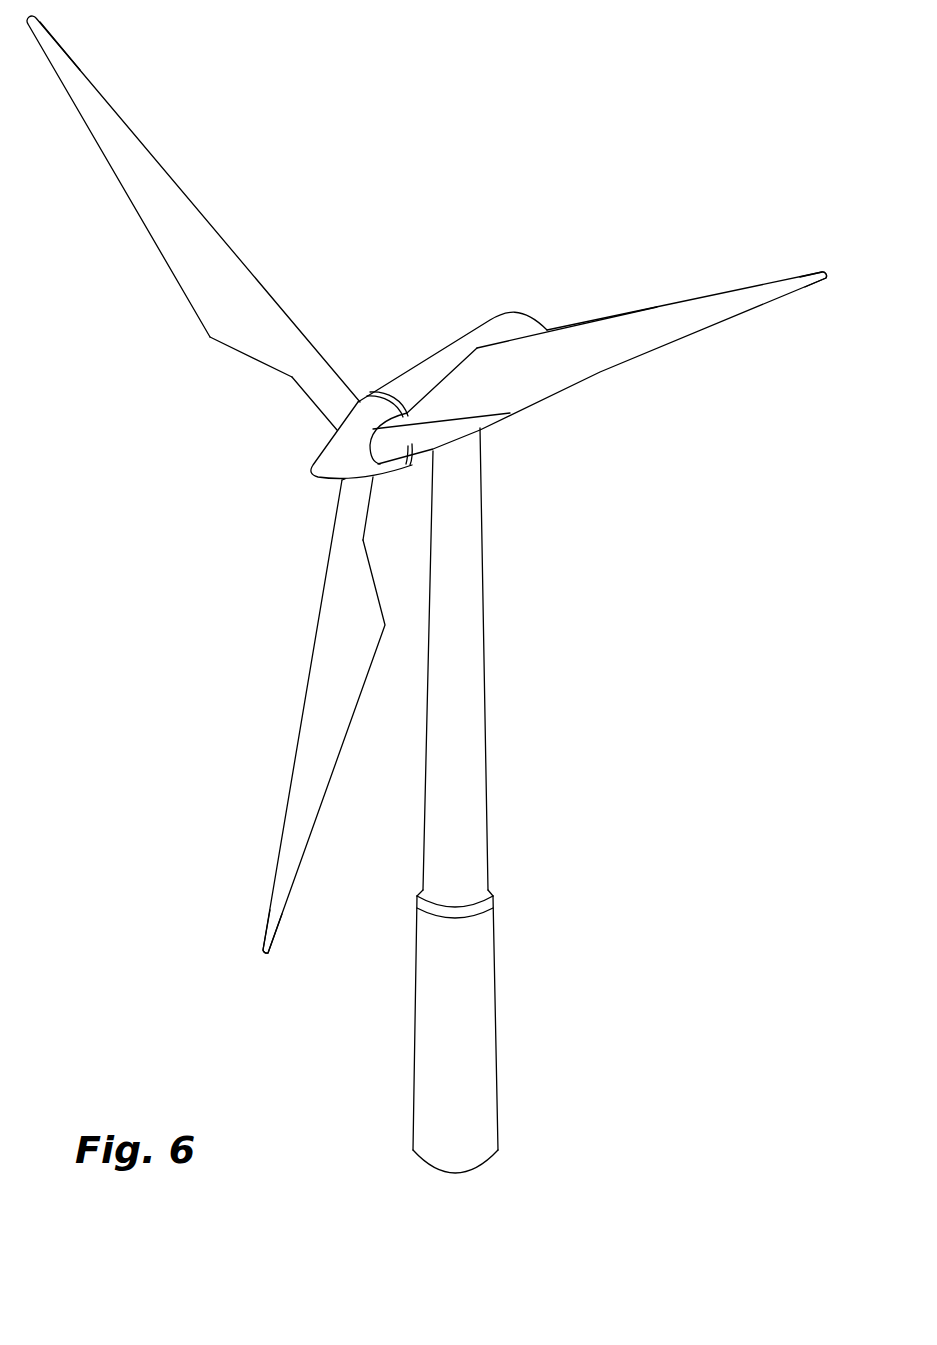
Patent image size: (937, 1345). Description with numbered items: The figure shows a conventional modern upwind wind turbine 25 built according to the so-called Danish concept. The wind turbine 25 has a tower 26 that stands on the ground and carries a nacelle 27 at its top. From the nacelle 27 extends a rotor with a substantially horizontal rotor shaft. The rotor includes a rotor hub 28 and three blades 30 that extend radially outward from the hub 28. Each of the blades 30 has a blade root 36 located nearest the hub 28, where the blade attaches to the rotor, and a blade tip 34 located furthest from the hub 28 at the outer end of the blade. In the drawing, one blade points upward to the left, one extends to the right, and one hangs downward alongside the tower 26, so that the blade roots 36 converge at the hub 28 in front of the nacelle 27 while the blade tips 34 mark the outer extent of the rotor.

The wind turbine 25 is at (577, 741).
The tower 26 is at (473, 664).
The nacelle 27 is at (418, 372).
The rotor hub 28 is at (332, 457).
The blades 30 is at (222, 310).
The blade tip 34 is at (72, 75).
The blade root 36 is at (338, 410).